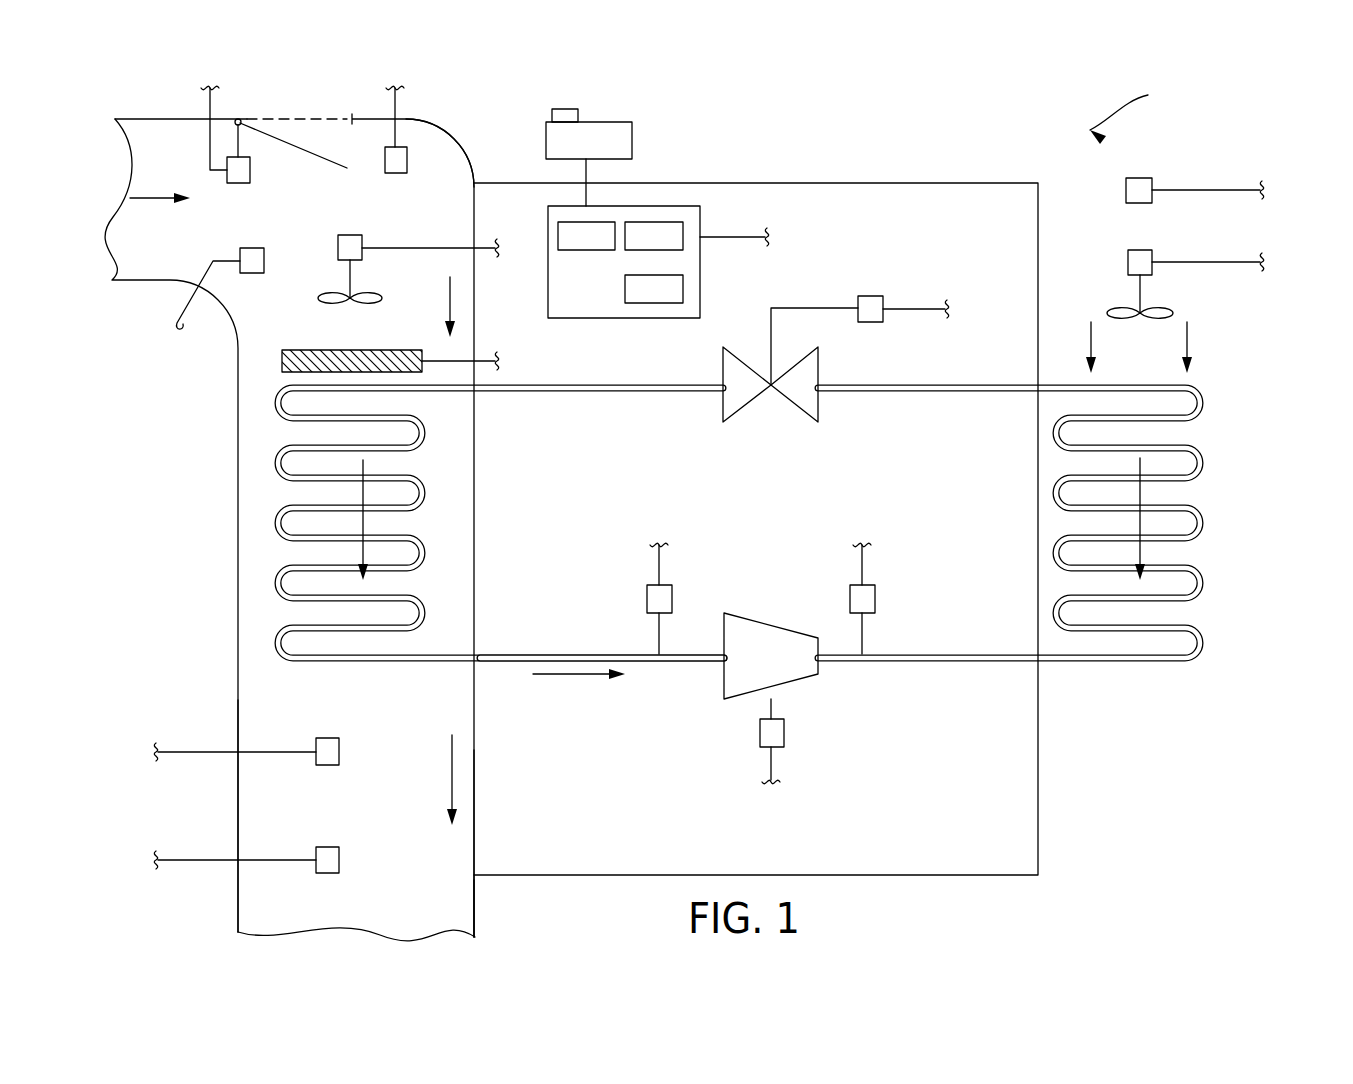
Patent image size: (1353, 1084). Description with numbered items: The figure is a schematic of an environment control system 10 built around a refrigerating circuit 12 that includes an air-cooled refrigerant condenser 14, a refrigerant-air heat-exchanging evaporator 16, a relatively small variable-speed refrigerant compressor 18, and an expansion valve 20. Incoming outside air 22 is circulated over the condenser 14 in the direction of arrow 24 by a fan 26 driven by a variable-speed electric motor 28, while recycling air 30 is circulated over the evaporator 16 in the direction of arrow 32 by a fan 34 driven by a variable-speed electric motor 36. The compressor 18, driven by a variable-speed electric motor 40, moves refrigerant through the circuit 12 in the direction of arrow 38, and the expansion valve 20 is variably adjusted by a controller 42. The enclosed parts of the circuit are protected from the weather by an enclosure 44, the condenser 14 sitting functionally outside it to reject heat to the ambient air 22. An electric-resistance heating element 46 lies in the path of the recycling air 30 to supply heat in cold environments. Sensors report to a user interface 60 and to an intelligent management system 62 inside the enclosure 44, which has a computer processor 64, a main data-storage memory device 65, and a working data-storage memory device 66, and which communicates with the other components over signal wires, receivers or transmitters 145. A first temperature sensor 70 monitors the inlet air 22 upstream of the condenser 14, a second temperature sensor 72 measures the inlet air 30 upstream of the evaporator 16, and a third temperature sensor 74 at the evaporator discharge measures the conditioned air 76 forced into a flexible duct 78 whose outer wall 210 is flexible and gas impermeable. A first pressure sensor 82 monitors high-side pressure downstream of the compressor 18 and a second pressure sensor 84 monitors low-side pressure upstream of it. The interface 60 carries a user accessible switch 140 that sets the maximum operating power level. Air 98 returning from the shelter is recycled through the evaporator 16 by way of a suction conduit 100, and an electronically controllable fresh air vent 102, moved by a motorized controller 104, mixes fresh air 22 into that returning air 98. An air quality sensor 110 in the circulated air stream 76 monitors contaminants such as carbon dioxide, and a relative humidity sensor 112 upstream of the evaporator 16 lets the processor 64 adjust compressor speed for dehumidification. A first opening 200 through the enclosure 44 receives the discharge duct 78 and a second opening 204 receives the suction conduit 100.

The environment control system 10 is at (1178, 100).
The refrigerating circuit 12 is at (497, 655).
The air-cooled refrigerant condenser 14 is at (1213, 612).
The refrigerant-air heat-exchanging evaporator 16 is at (452, 452).
The variable-speed refrigerant compressor 18 is at (770, 613).
The expansion valve 20 is at (722, 410).
The incoming air 22 is at (1188, 340).
The arrow 24 is at (1140, 493).
The fan 26 is at (1142, 298).
The variable-speed electric motor 28 is at (1128, 262).
The recycling air 30 is at (448, 302).
The arrow 32 is at (363, 523).
The fan 34 is at (358, 270).
The variable-speed electric motor 36 is at (350, 235).
The arrow 38 is at (570, 676).
The variable-speed electric motor 40 is at (760, 735).
The controller 42 is at (875, 323).
The enclosure 44 is at (875, 183).
The electric-resistance heating element 46 is at (290, 350).
The user interface 60 is at (632, 142).
The intelligent management system 62 is at (597, 318).
The computer processor 64 is at (655, 222).
The main data-storage memory device 65 is at (592, 250).
The working data-storage memory device 66 is at (683, 289).
The first temperature sensor 70 is at (1126, 190).
The second temperature sensor 72 is at (383, 160).
The third temperature sensor 74 is at (326, 738).
The conditioned air 76 is at (452, 765).
The flexible duct 78 is at (475, 903).
The first pressure sensor 82 is at (875, 600).
The second pressure sensor 84 is at (647, 600).
The returning air 98 is at (140, 198).
The suction conduit 100 is at (231, 325).
The fresh air vent 102 is at (282, 138).
The motorized controller 104 is at (250, 170).
The air quality sensor 110 is at (326, 847).
The relative humidity sensor 112 is at (238, 250).
The user accessible switch 140 is at (565, 109).
The signal wires, receivers or transmitters 145 is at (207, 103).
The first opening 200 is at (475, 868).
The second opening 204 is at (472, 180).
The outer wall 210 is at (239, 902).